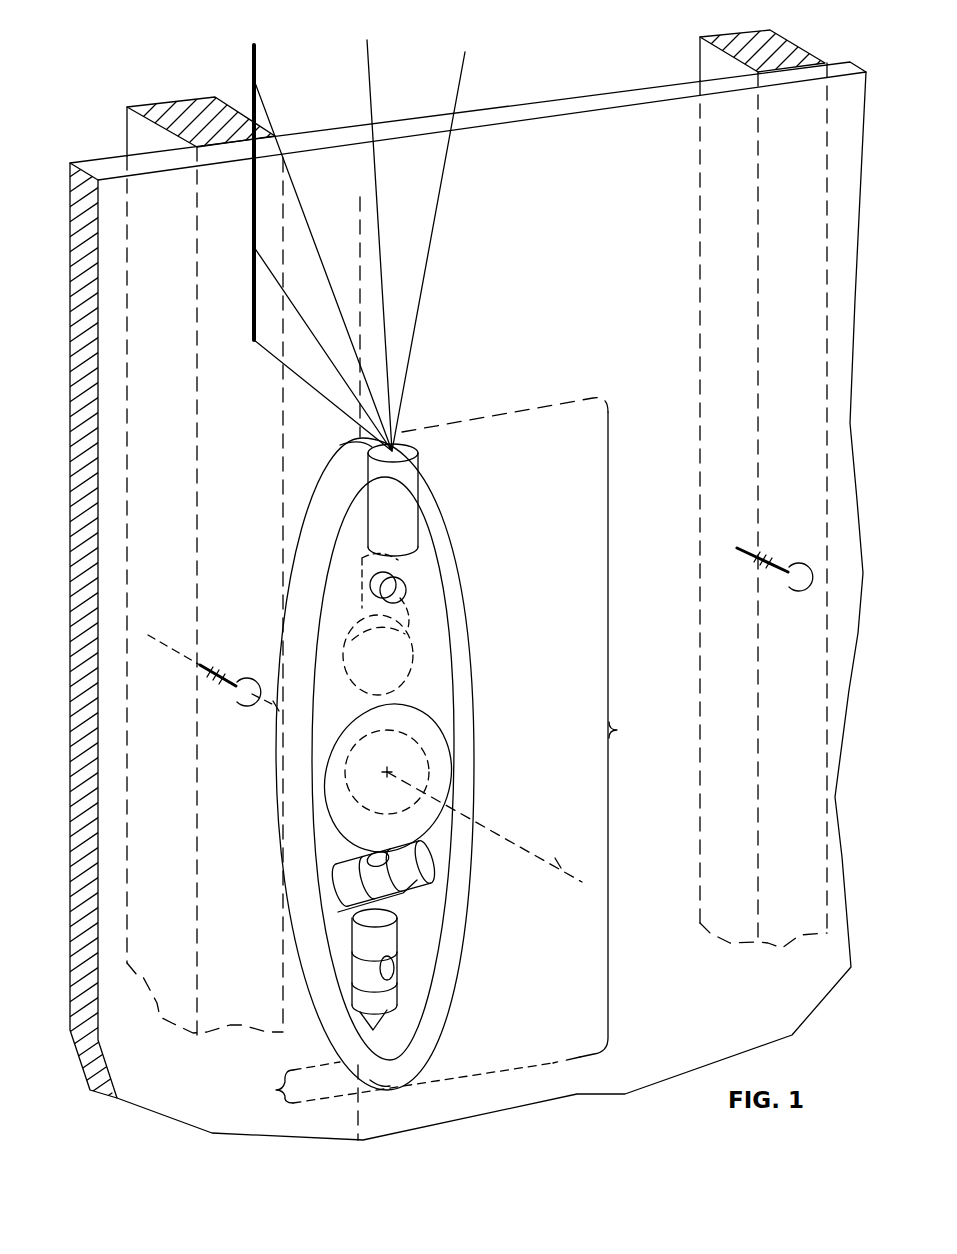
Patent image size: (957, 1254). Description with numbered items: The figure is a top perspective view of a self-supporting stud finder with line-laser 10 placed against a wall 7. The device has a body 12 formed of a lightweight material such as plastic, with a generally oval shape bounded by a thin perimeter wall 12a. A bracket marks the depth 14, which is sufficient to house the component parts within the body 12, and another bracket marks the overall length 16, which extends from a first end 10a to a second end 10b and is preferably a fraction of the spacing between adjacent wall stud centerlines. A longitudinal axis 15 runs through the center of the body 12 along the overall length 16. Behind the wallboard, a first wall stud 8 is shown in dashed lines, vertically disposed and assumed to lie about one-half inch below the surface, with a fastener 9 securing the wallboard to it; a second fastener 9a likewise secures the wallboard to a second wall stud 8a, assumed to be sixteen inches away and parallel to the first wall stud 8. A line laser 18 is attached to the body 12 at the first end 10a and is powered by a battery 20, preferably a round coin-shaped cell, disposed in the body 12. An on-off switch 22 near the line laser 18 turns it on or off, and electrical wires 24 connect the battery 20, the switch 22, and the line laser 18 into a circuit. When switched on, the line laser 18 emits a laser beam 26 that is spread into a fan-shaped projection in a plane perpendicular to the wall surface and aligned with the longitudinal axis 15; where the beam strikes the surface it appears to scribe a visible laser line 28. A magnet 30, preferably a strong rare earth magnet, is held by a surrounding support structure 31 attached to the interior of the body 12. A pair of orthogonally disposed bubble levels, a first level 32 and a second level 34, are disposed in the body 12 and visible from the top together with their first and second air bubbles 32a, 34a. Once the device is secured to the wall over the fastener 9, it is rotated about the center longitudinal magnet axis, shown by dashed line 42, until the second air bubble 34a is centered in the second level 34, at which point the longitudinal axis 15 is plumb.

The wall panel 7 is at (594, 230).
The first wall stud 8 is at (223, 898).
The second wall stud 8a is at (733, 487).
The fastener 9 is at (236, 703).
The second fastener 9a is at (787, 592).
The self-supporting stud finder with line-laser 10 is at (485, 721).
The first end 10a is at (366, 447).
The second end 10b is at (347, 1062).
The body 12 is at (308, 977).
The thin perimeter wall 12a is at (430, 1022).
The depth 14 is at (398, 1085).
The longitudinal axis 15 is at (360, 254).
The overall length 16 is at (617, 730).
The line laser 18 is at (410, 480).
The battery 20 is at (405, 672).
The on-off switch 22 is at (407, 590).
The electrical wires 24 is at (362, 565).
The laser beam 26 is at (420, 318).
The visible laser line 28 is at (252, 262).
The magnet 30 is at (415, 768).
The support structure 31 is at (445, 783).
The first level 32 is at (392, 997).
The first air bubble 32a is at (394, 968).
The second level 34 is at (418, 878).
The second air bubble 34a is at (390, 862).
The center longitudinal magnet axis 42 is at (560, 860).